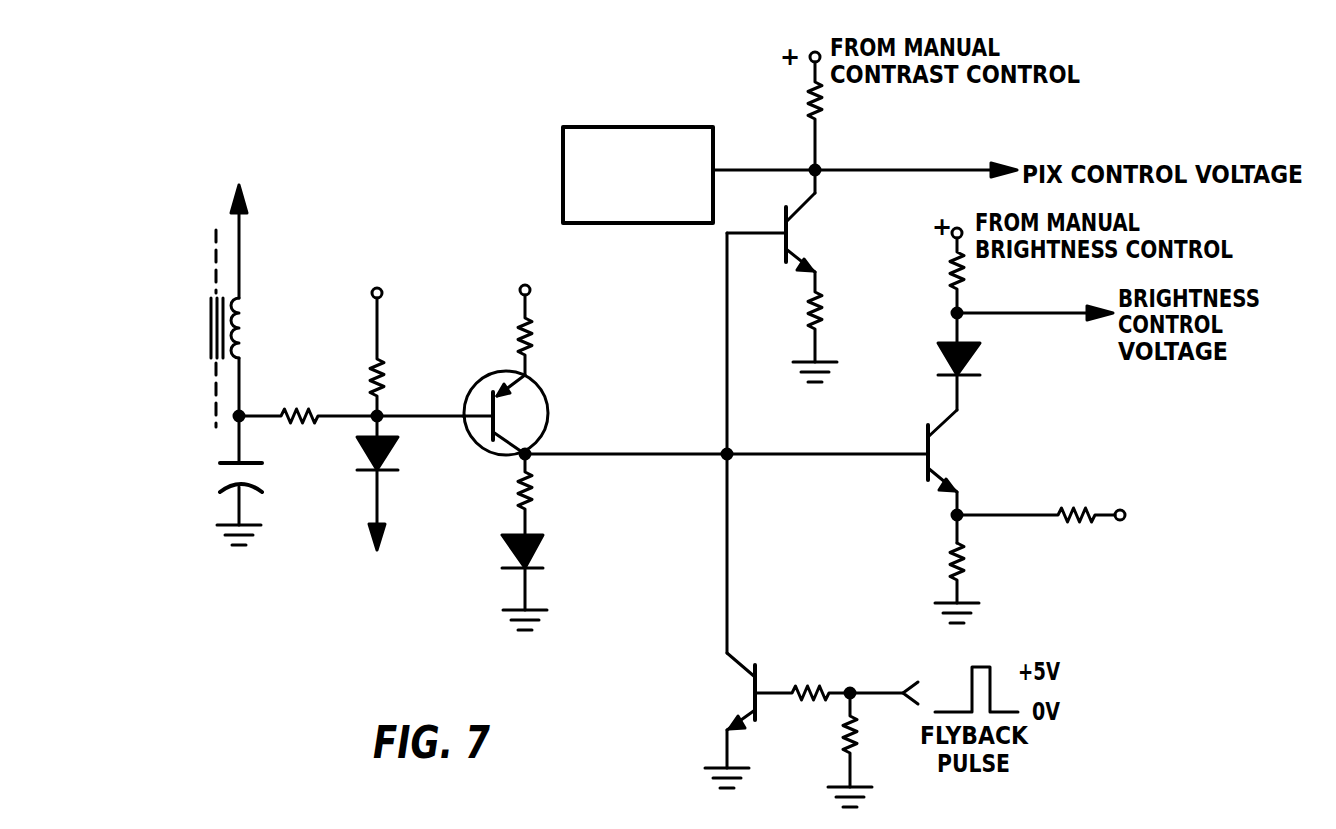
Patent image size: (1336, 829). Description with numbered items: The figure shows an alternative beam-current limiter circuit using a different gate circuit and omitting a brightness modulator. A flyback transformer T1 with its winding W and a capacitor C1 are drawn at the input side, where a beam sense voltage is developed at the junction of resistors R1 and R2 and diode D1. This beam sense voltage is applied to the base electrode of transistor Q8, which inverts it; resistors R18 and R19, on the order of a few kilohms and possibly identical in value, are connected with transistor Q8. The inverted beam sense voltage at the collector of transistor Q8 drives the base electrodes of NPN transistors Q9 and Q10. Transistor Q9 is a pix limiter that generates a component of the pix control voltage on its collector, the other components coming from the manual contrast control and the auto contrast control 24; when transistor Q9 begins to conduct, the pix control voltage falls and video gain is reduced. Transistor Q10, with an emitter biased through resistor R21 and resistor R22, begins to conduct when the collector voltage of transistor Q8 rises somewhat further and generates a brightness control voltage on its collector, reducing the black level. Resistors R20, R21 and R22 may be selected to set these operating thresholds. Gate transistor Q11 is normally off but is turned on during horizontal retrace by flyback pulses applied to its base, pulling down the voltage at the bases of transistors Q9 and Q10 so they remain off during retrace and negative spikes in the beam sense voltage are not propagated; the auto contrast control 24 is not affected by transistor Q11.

The auto contrast control 24 is at (633, 127).
The flyback transformer T1 is at (229, 289).
The transformer winding W is at (250, 328).
The capacitor C1 is at (212, 495).
The resistor R1 is at (351, 418).
The resistor R2 is at (395, 335).
The diode D1 is at (387, 494).
The transistor Q8 is at (525, 413).
The resistor R18 is at (535, 313).
The resistor R19 is at (539, 542).
The transistor Q9 is at (811, 232).
The resistor R20 is at (832, 327).
The transistor Q10 is at (960, 451).
The resistor R21 is at (938, 583).
The resistor R22 is at (1080, 517).
The gate transistor Q11 is at (720, 720).